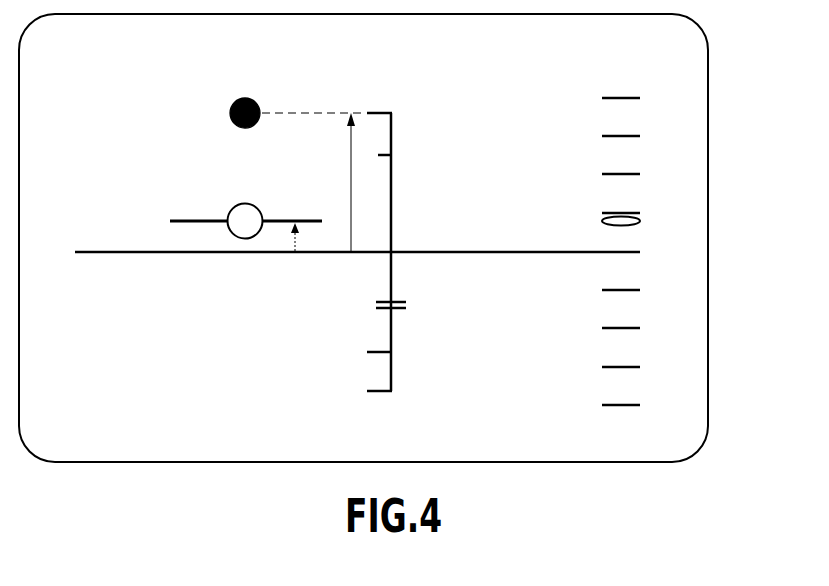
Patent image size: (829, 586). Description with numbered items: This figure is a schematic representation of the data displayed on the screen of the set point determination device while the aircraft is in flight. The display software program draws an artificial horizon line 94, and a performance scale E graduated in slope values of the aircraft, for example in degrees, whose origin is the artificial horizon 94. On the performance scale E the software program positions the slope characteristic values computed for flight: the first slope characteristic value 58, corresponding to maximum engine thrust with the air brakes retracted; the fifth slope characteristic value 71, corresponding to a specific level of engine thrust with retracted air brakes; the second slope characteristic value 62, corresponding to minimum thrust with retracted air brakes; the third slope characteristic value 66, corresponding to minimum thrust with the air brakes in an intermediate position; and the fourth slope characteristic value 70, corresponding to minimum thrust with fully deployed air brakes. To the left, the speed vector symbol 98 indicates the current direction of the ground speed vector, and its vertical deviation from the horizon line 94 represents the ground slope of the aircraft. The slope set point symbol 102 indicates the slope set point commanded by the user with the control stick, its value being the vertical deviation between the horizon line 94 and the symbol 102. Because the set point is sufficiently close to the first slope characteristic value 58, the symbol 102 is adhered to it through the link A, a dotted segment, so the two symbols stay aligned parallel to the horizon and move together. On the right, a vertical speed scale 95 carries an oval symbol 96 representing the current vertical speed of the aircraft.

The first slope characteristic value 58 is at (396, 109).
The fifth slope characteristic value 71 is at (400, 153).
The second slope characteristic value 62 is at (408, 297).
The third slope characteristic value 66 is at (394, 357).
The fourth slope characteristic value 70 is at (384, 397).
The artificial horizon line 94 is at (562, 250).
The vertical speed scale 95 is at (696, 131).
The current vertical speed symbol 96 is at (641, 221).
The speed vector symbol 98 is at (245, 239).
The slope set point symbol 102 is at (231, 108).
The link A is at (300, 112).
The performance scale E is at (444, 188).